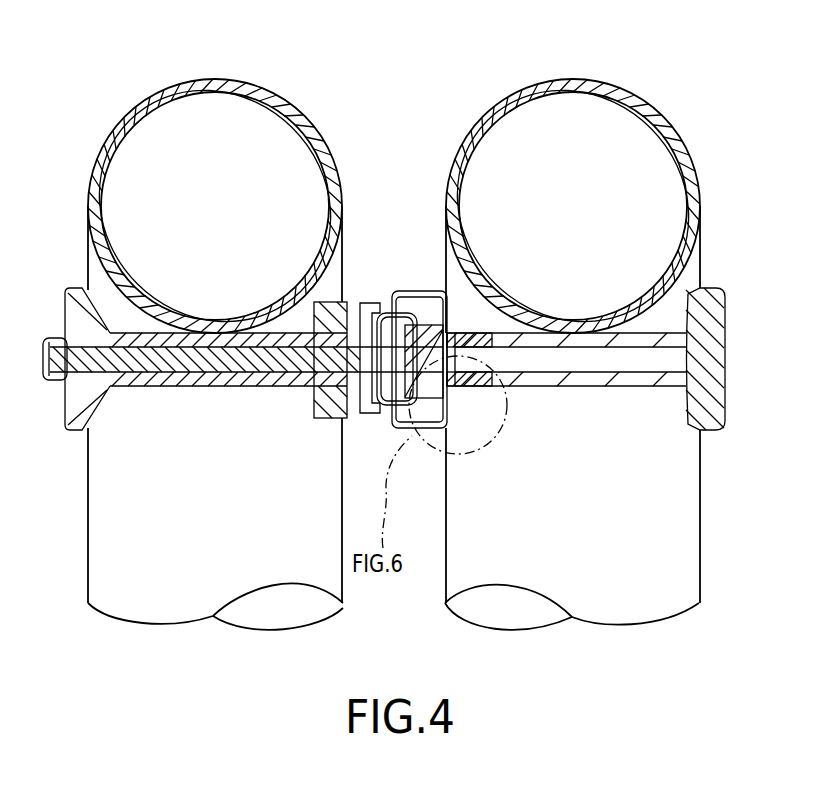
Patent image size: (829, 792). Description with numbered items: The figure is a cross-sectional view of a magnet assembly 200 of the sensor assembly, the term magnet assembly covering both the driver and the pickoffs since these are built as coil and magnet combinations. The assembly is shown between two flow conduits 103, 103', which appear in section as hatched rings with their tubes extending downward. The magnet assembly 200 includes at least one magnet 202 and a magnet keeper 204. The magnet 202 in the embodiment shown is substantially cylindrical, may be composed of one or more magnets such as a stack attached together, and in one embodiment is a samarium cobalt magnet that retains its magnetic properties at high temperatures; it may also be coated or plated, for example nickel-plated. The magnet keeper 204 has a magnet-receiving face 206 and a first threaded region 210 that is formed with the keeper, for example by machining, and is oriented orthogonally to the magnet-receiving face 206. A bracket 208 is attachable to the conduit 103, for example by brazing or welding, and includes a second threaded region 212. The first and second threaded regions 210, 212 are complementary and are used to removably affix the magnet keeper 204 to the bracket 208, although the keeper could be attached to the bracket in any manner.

The conduit 103 is at (573, 334).
The conduit 103' is at (215, 328).
The magnet assembly 200 is at (391, 160).
The magnet 202 is at (420, 425).
The magnet keeper 204 is at (457, 407).
The magnet-receiving face 206 is at (438, 300).
The bracket 208 is at (570, 386).
The first threaded region 210 is at (490, 386).
The second threaded region 212 is at (480, 336).